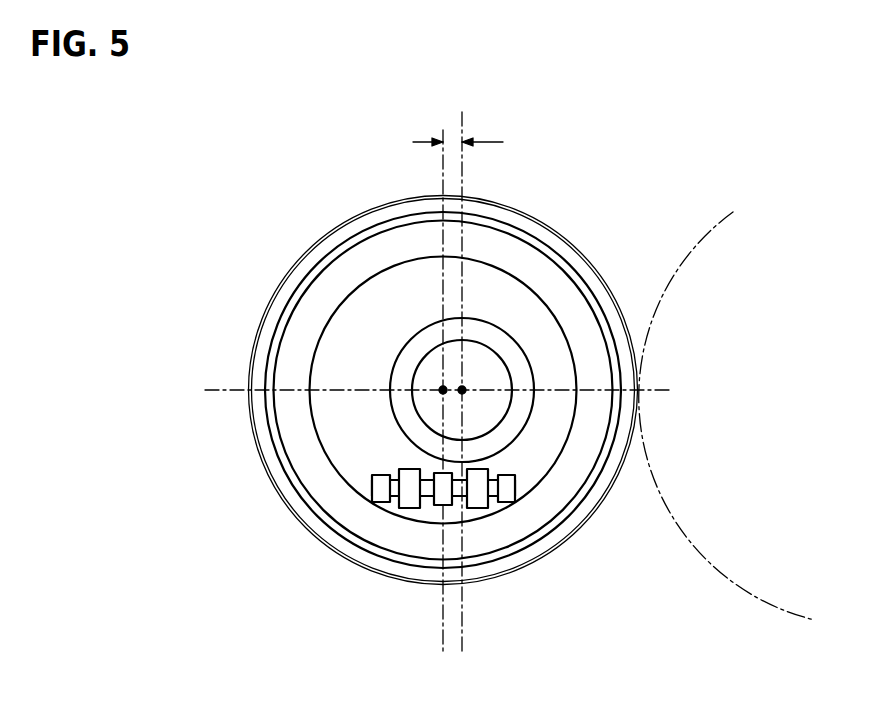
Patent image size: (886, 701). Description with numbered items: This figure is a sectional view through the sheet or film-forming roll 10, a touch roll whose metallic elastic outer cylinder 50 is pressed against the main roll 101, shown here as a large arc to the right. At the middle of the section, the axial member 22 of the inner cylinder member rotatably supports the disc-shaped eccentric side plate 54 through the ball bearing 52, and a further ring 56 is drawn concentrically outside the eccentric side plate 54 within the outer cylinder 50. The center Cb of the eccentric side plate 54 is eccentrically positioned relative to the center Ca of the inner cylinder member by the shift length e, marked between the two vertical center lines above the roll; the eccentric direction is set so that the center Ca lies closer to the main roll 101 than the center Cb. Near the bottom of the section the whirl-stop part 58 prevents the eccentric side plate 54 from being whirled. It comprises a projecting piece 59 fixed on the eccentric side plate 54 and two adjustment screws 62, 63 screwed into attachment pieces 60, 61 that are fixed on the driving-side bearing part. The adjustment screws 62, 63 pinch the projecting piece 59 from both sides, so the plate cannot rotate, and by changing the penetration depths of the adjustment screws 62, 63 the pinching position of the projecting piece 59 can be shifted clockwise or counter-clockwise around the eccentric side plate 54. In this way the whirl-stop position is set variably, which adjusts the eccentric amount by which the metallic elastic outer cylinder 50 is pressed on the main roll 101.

The sheet or film-forming roll 10 is at (476, 352).
The metallic elastic outer cylinder 50 is at (527, 218).
The axial member 22 is at (495, 370).
The ball bearing 52 is at (525, 380).
The eccentric side plate 54 is at (570, 417).
The outer ring (member 55) 56 is at (583, 463).
The whirl-stop part 58 is at (429, 505).
The projecting piece 59 is at (448, 508).
The attachment piece 60 is at (400, 509).
The attachment piece 61 is at (478, 508).
The adjustment screw 62 is at (372, 492).
The adjustment screw 63 is at (515, 492).
The main roll 101 is at (718, 572).
The center of the inner cylinder member Ca is at (470, 382).
The center of the eccentric side plate Cb is at (440, 391).
The shift length e is at (446, 140).